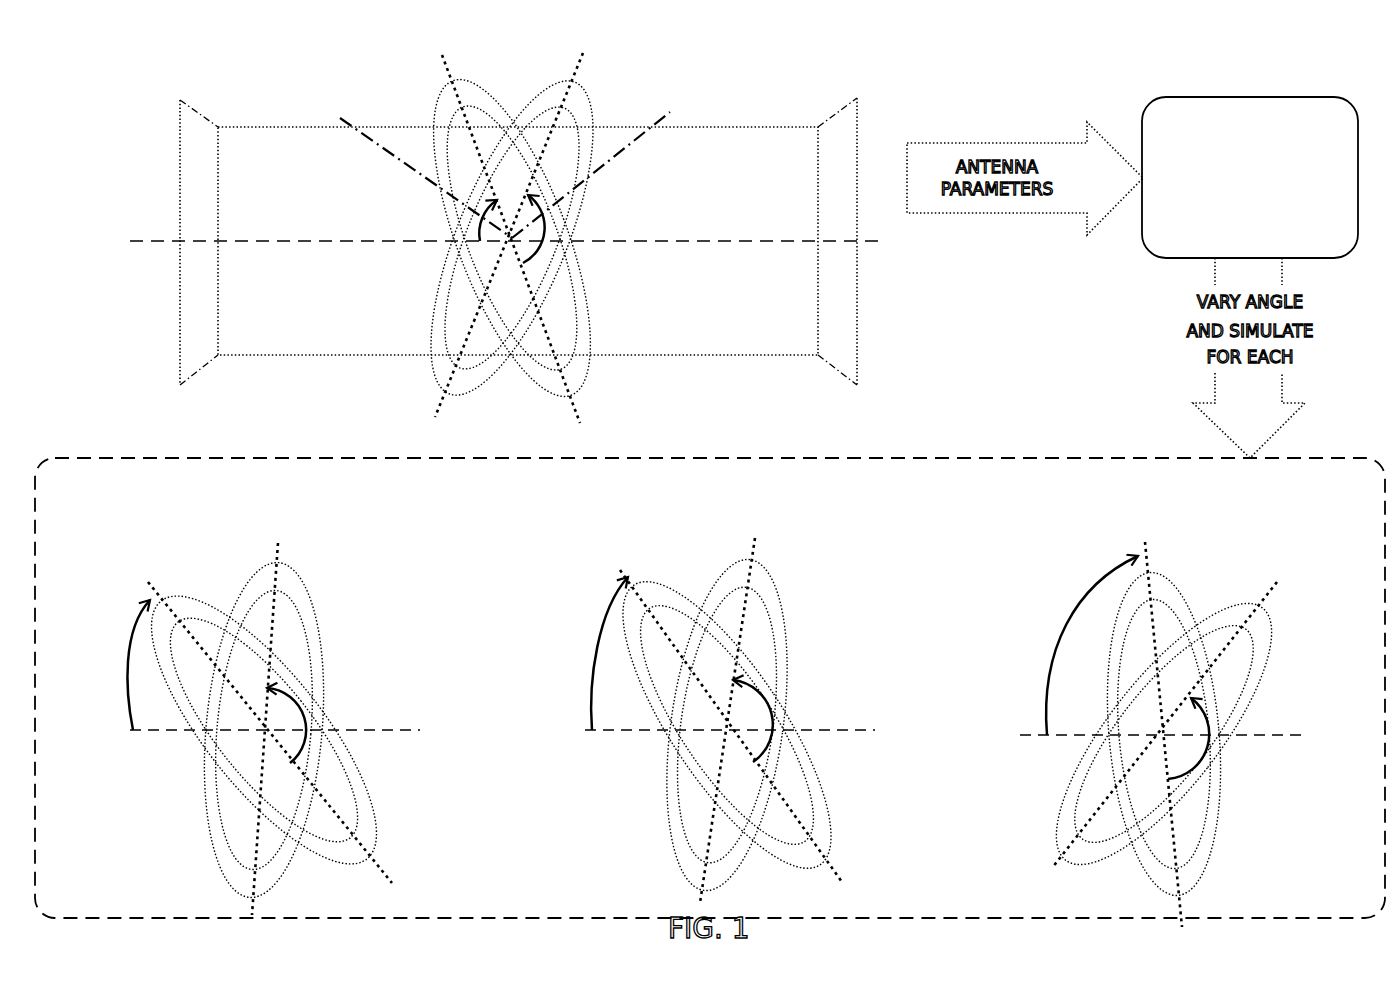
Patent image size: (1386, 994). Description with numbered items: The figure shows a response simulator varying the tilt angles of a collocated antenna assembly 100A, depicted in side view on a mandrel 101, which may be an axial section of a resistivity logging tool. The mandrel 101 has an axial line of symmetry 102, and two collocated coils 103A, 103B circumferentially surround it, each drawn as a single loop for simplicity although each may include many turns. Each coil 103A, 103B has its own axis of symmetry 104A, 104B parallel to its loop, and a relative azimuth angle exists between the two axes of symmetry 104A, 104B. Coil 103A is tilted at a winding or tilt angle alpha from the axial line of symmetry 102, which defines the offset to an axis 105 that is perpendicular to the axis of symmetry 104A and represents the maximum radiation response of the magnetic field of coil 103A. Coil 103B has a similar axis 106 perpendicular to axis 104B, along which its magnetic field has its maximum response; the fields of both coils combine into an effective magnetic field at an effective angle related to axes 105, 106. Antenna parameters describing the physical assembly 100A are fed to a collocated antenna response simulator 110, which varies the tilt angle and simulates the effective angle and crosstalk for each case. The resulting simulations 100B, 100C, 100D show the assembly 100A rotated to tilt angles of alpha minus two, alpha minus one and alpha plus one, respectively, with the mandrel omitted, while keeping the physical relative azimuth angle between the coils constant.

The collocated antenna assembly 100A is at (152, 93).
The simulation 100B is at (106, 560).
The simulation 100C is at (576, 560).
The simulation 100D is at (1028, 548).
The mandrel 101 is at (300, 125).
The axial line of symmetry 102 is at (134, 244).
The coil 103A is at (432, 120).
The coil 103B is at (588, 100).
The axis of symmetry 104A is at (581, 423).
The axis of symmetry 104B is at (436, 408).
The axis 105 is at (672, 112).
The axis 106 is at (348, 120).
The collocated antenna response simulator 110 is at (1236, 214).